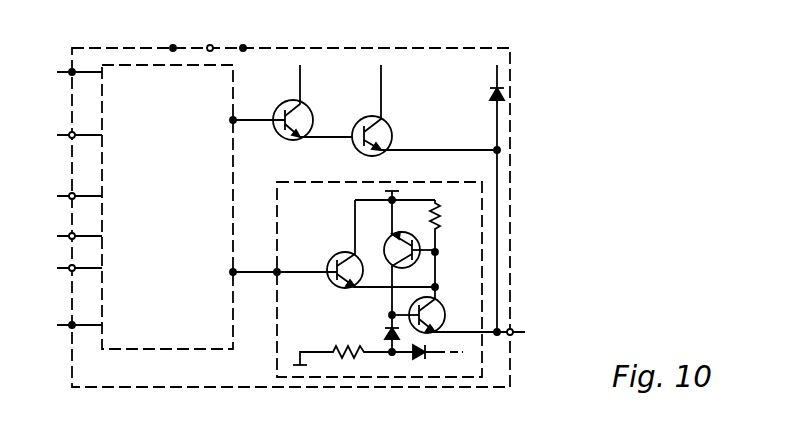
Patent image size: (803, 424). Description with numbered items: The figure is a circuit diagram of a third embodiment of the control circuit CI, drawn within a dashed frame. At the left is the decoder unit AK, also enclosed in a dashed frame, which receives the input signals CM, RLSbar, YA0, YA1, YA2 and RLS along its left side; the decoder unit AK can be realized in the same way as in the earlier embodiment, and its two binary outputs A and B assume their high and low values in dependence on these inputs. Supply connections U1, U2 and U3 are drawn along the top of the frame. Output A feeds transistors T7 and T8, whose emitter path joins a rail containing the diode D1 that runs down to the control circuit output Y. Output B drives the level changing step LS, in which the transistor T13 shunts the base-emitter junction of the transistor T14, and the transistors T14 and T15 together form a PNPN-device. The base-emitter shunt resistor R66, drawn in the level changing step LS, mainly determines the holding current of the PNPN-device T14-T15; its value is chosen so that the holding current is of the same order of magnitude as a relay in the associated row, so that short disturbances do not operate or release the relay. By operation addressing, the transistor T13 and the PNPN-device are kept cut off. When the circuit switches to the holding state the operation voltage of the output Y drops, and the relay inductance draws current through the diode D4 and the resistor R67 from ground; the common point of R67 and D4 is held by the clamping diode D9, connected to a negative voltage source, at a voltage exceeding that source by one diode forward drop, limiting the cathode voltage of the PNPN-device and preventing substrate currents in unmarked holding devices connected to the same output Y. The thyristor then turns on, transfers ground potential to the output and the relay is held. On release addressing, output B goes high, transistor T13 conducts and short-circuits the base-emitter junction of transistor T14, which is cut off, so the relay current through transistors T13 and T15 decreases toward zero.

The control circuit CI is at (683, 31).
The level changing step LS is at (494, 421).
The decoder unit AK is at (178, 232).
The CM input CM is at (64, 72).
The inverted RLS input RLSbar is at (55, 126).
The YA0 input YA0 is at (63, 196).
The YA1 input YA1 is at (63, 236).
The YA2 input YA2 is at (63, 268).
The RLS input RLS is at (62, 325).
The supply voltage U1 is at (174, 46).
The supply voltage U2 is at (211, 46).
The supply voltage U3 is at (244, 46).
The binary output A is at (257, 110).
The binary output B is at (283, 262).
The output Y is at (524, 332).
The transistor T7 is at (305, 106).
The transistor T8 is at (390, 123).
The transistor T13 is at (332, 252).
The transistor T14 is at (392, 235).
The transistor T15 is at (440, 309).
The diode D1 is at (483, 197).
The diode D4 is at (379, 335).
The clamping diode D9 is at (418, 358).
The base-emitter shunt resistor R66 is at (452, 245).
The resistor R67 is at (342, 350).